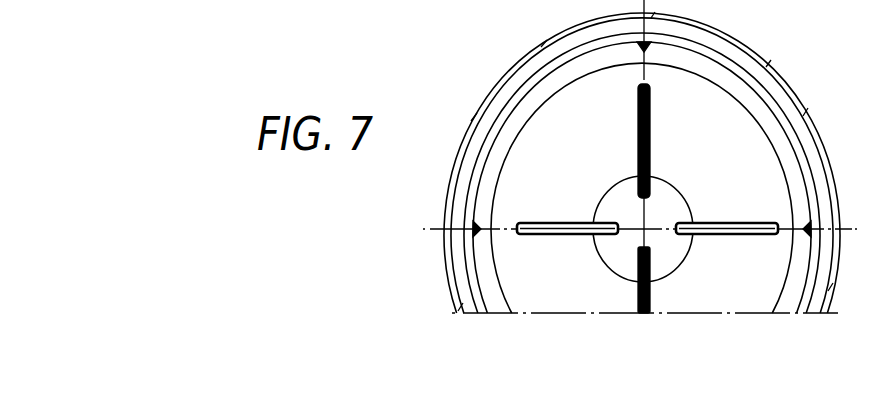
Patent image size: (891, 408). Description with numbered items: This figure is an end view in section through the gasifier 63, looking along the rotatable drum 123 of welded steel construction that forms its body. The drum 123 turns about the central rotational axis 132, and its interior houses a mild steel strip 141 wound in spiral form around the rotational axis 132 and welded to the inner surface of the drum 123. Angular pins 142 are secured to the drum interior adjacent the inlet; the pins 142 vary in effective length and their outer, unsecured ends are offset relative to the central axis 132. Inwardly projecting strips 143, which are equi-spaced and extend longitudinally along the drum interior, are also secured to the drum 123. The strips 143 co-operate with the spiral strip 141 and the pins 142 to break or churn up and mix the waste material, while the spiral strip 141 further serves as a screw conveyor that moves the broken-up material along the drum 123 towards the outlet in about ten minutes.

The gasifier 63 is at (765, 39).
The rotatable drum 123 is at (444, 197).
The inwardly projecting strips 143 is at (482, 228).
The mild steel strip 141 is at (795, 170).
The rotational axis 132 is at (647, 226).
The angular pins 142 is at (637, 148).